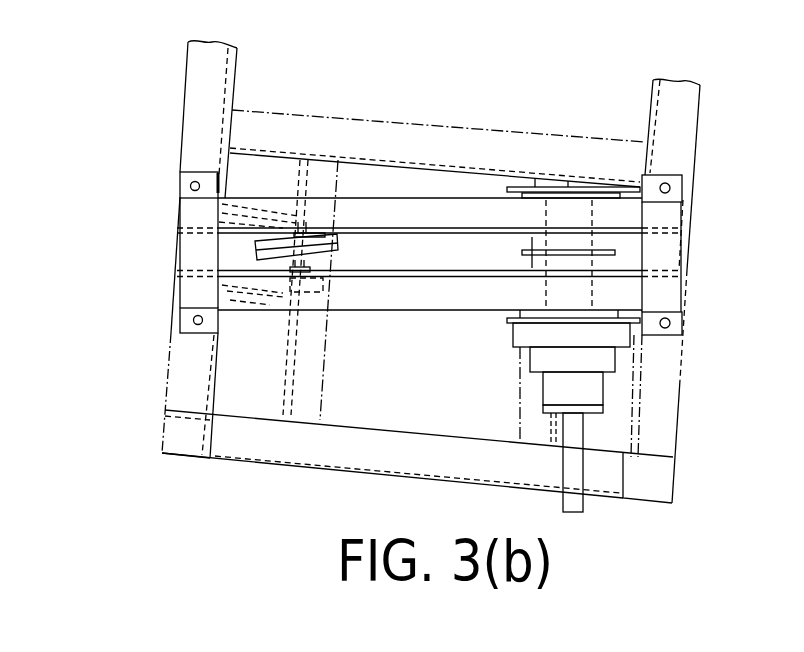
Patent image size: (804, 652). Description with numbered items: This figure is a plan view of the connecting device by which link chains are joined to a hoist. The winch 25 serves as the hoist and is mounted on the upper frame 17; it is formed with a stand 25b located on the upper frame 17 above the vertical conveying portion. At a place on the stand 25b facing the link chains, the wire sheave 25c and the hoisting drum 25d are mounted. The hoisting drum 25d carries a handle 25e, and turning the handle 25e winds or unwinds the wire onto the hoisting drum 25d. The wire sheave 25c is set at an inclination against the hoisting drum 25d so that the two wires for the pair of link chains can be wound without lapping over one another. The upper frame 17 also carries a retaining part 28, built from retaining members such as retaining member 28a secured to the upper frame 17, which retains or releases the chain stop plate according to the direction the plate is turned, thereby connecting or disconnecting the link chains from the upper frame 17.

The upper frame 17 is at (184, 137).
The winch 25 is at (449, 322).
The stand 25b is at (190, 212).
The wire sheave 25c is at (322, 235).
The hoisting drum 25d is at (558, 267).
The handle 25e is at (569, 467).
The retaining part 28 is at (278, 310).
The retaining member 28a is at (328, 353).